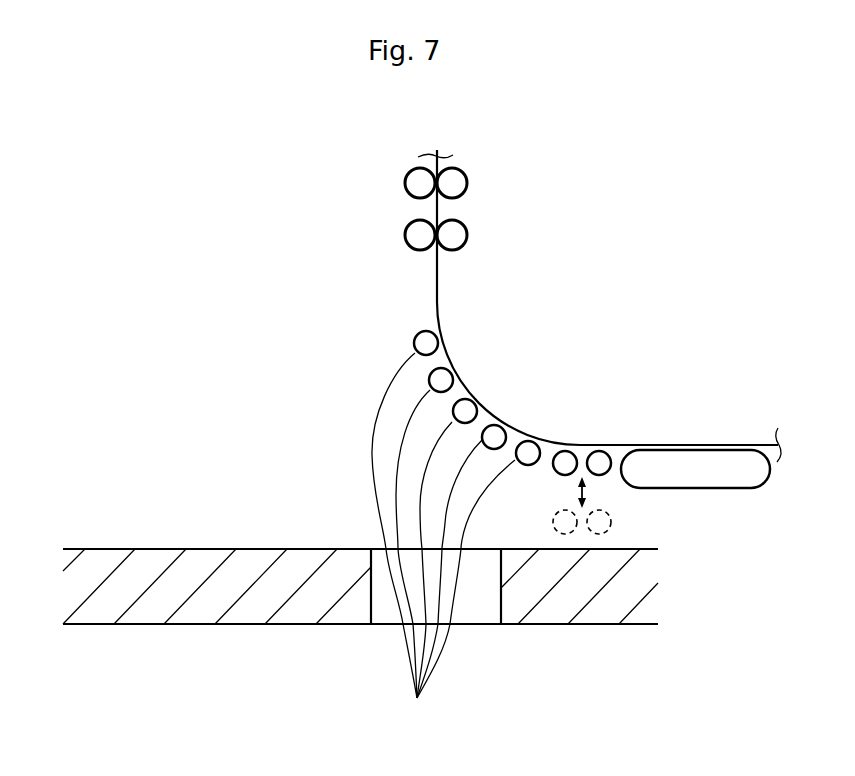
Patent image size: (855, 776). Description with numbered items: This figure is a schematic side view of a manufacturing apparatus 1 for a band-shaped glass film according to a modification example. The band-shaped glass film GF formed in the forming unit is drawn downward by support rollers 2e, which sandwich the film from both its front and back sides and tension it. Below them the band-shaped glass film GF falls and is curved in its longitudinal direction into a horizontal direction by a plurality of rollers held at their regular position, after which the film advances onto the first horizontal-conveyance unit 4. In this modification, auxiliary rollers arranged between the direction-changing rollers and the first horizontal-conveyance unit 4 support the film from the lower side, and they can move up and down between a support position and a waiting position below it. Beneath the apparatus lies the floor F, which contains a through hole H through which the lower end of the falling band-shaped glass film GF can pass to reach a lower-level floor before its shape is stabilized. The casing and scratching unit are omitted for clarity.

The manufacturing apparatus for a band-shaped glass film 1 is at (651, 204).
The support rollers 2e is at (467, 183).
The band-shaped glass film GF is at (447, 293).
The first horizontal-conveyance unit 4 is at (718, 489).
The floor F is at (94, 548).
The through hole H is at (501, 600).